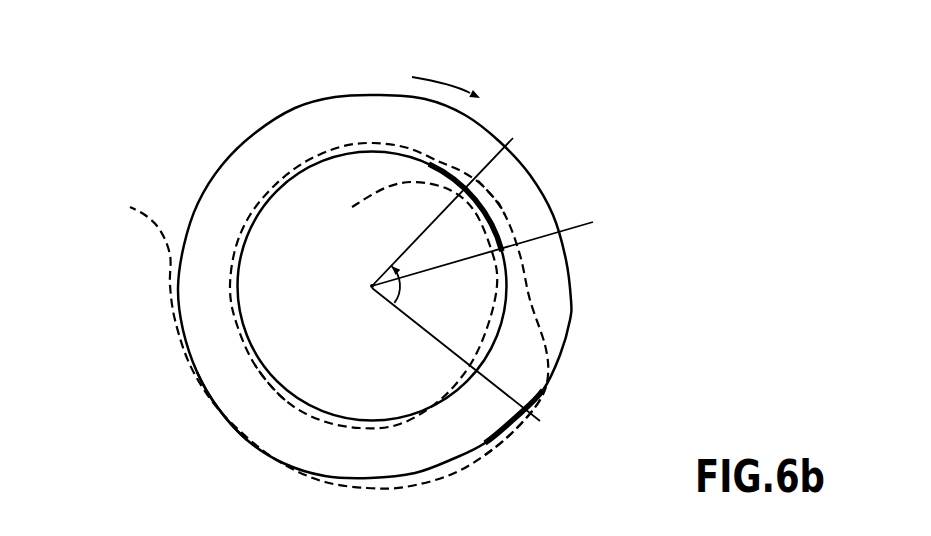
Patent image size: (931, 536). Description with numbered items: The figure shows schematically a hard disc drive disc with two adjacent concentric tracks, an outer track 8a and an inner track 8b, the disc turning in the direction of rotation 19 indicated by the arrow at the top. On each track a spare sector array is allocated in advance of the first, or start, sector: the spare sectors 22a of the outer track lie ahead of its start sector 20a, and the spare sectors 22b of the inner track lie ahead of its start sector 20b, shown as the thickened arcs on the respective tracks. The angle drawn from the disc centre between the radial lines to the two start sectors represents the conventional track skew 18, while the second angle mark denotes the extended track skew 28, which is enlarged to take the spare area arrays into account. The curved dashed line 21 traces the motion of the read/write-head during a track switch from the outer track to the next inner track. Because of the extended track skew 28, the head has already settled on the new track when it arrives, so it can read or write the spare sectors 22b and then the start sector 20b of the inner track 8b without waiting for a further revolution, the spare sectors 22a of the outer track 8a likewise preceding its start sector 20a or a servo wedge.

The direction of rotation 19 is at (445, 78).
The motion of the read/write-head during a track switch 21 is at (540, 303).
The start sector of the inner track 20b is at (462, 175).
The spare sectors of the inner track 22b is at (500, 205).
The start sector of the outer track 20a is at (552, 404).
The spare sectors of the outer track 22a is at (520, 444).
The track skew 18 is at (397, 300).
The extended track skew 28 is at (372, 288).
The outer track 8a is at (203, 414).
The inner track 8b is at (292, 413).